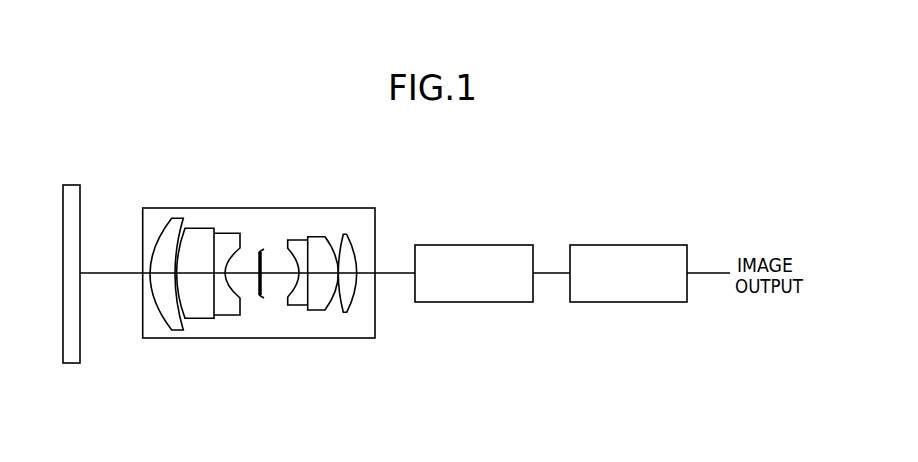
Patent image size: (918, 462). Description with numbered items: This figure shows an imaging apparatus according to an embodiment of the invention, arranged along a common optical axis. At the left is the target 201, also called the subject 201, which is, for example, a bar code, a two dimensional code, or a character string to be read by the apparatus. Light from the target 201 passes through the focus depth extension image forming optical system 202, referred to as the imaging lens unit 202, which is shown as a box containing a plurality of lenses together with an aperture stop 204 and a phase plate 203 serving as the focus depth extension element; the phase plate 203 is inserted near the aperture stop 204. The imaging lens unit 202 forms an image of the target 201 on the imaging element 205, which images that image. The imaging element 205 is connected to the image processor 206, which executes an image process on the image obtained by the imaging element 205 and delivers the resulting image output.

The target 201 is at (68, 363).
The focus depth extension image forming optical system 202 is at (205, 339).
The phase plate 203 is at (260, 296).
The aperture stop 204 is at (264, 297).
The imaging element 205 is at (472, 302).
The image processor 206 is at (628, 302).